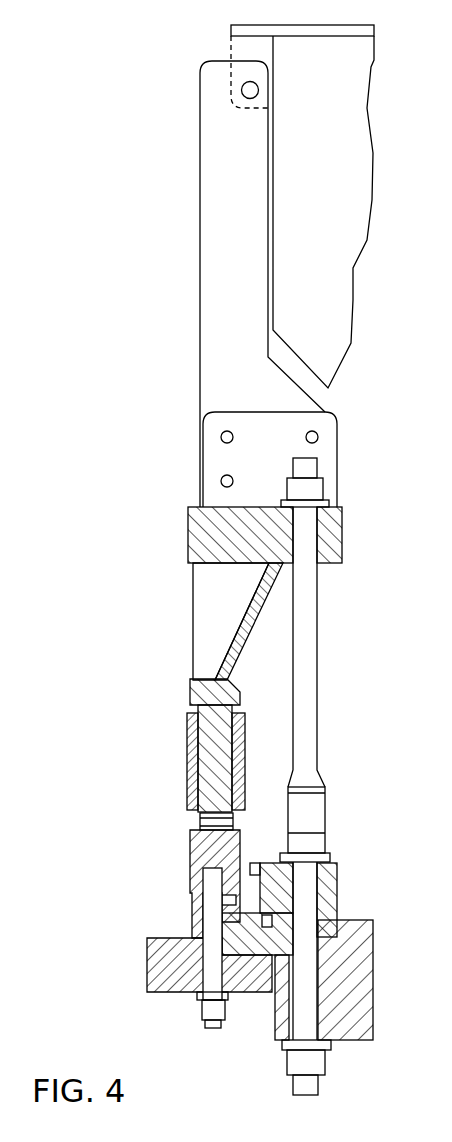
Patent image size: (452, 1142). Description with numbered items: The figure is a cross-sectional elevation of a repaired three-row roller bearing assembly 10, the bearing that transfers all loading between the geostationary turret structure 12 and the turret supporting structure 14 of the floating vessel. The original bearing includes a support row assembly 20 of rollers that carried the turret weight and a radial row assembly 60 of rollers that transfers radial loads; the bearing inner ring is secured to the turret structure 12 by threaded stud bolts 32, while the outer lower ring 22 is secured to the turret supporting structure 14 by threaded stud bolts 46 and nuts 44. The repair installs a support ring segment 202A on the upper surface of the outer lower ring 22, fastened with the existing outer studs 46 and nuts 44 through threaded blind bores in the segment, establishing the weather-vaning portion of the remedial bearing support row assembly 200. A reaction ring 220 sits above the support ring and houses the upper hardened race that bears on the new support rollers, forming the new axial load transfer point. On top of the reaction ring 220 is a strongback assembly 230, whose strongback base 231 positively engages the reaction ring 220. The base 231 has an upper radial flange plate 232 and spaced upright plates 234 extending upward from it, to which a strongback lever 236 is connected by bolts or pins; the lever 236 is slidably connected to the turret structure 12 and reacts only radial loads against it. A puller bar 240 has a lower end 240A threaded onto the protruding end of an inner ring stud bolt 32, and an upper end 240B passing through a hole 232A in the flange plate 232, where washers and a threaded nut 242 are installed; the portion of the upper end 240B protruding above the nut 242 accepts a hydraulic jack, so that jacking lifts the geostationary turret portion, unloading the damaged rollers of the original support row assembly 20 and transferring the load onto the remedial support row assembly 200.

The strongback lever 236 is at (213, 155).
The spaced upright plates 234 is at (208, 452).
The upper end of puller bar 240B is at (317, 464).
The threaded nut 242 is at (313, 487).
The upper radial flange plate 232 is at (190, 531).
The hole in flange plate 232A is at (295, 534).
The strongback base 231 is at (207, 590).
The strongback assembly 230 is at (188, 674).
The reaction ring 220 is at (215, 748).
The remedial bearing support row assembly 200 is at (193, 818).
The support ring segment 202A is at (205, 838).
The three-row roller bearing assembly 10 is at (176, 882).
The puller bar 240 is at (305, 630).
The lower end of puller bar 240A is at (310, 810).
The threaded stud bolt 32 is at (307, 888).
The outer lower ring 22 is at (235, 918).
The support row assembly 20 is at (278, 920).
The radial row assembly 60 is at (212, 903).
The turret supporting structure 14 is at (160, 963).
The turret structure 12 is at (368, 975).
The nut 44 is at (203, 1010).
The threaded stud bolt 46 is at (195, 993).